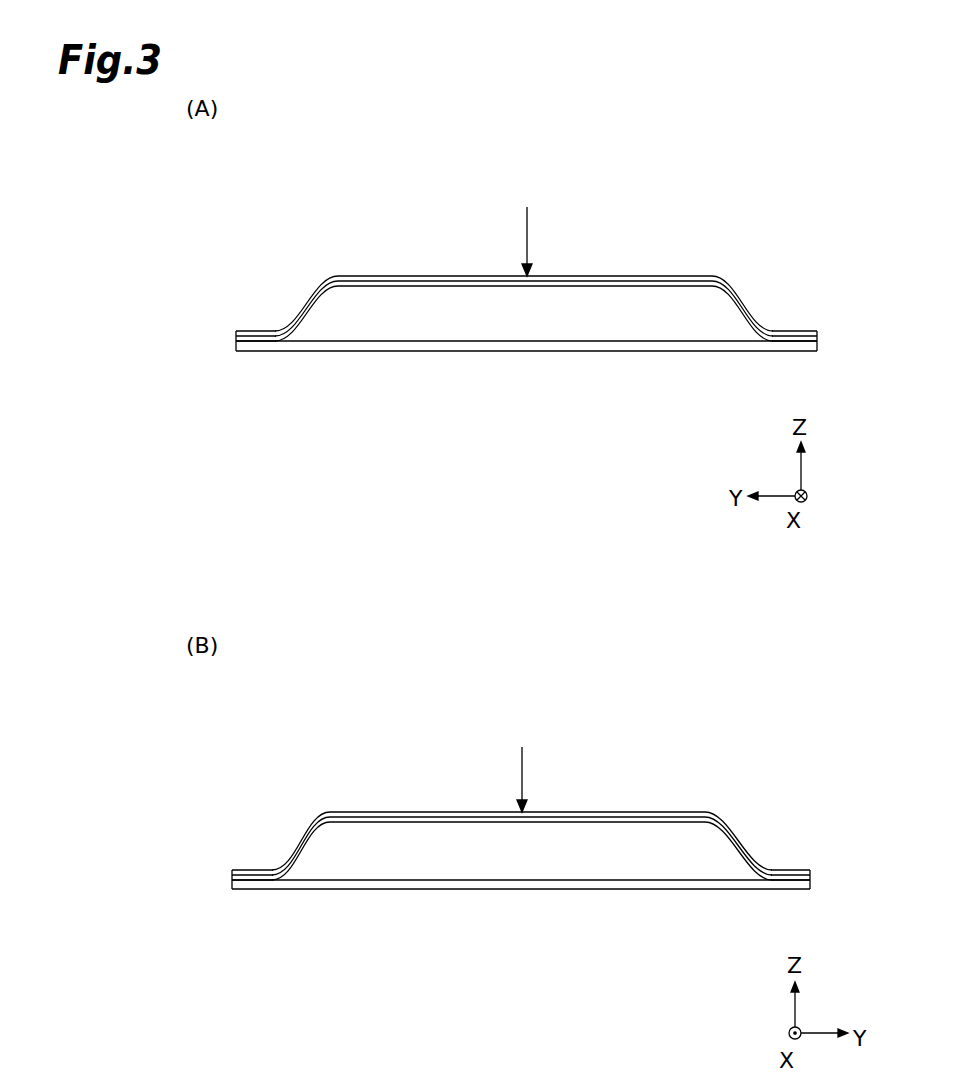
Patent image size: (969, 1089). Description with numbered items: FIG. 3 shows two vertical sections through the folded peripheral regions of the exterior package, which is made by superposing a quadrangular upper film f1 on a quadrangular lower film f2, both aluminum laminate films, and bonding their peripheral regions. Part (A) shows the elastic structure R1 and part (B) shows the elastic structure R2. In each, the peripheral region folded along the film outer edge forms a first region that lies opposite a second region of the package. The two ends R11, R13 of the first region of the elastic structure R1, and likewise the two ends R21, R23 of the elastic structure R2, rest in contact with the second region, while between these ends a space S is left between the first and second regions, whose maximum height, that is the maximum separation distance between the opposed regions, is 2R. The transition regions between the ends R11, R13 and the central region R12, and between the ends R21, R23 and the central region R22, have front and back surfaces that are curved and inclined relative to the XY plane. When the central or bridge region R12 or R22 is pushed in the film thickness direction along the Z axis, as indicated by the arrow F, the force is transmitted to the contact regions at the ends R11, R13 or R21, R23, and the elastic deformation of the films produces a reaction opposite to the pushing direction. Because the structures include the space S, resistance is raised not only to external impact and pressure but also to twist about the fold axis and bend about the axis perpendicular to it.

The elastic structure R1 is at (528, 233).
The end of the first region R11 is at (790, 332).
The central region R12 is at (657, 276).
The end of the first region R13 is at (252, 331).
The elastic structure R2 is at (521, 772).
The end of the first region R21 is at (250, 870).
The central region R22 is at (652, 812).
The end of the first region R23 is at (787, 871).
The arrow F is at (527, 224).
The upper film f1 is at (600, 287).
The lower film f2 is at (598, 276).
The maximum height 2R is at (455, 288).
The space S is at (523, 584).